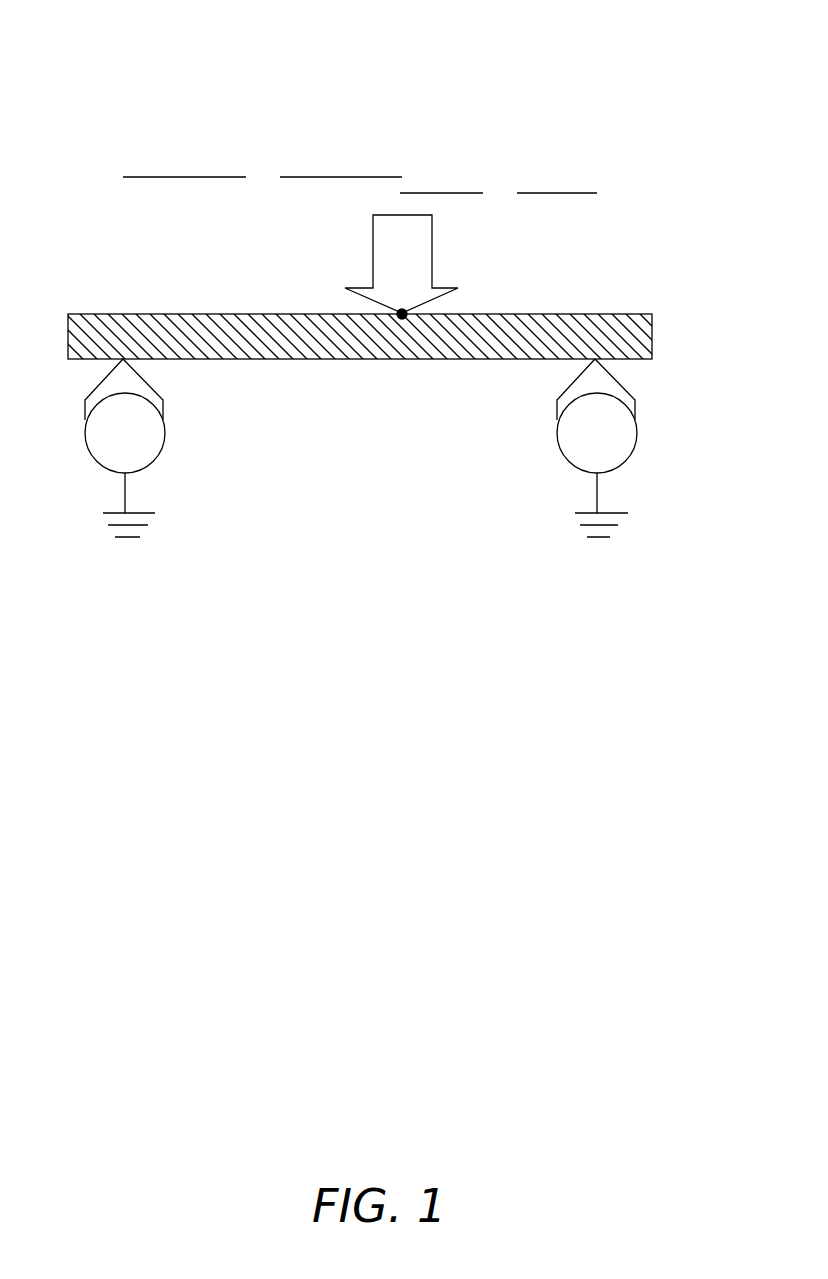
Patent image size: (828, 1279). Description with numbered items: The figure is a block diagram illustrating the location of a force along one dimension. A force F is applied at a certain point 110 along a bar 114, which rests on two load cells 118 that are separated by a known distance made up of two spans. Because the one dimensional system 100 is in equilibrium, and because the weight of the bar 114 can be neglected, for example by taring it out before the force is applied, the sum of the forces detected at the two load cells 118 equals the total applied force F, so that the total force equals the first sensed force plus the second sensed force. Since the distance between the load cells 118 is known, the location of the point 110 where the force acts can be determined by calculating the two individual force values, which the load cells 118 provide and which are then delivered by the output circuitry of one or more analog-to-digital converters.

The one dimensional system 100 is at (620, 90).
The point 110 is at (402, 314).
The bar 114 is at (636, 314).
The load cells 118 is at (98, 460).